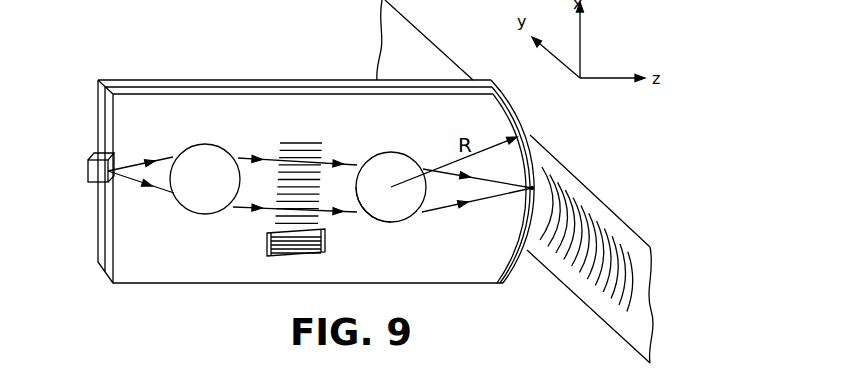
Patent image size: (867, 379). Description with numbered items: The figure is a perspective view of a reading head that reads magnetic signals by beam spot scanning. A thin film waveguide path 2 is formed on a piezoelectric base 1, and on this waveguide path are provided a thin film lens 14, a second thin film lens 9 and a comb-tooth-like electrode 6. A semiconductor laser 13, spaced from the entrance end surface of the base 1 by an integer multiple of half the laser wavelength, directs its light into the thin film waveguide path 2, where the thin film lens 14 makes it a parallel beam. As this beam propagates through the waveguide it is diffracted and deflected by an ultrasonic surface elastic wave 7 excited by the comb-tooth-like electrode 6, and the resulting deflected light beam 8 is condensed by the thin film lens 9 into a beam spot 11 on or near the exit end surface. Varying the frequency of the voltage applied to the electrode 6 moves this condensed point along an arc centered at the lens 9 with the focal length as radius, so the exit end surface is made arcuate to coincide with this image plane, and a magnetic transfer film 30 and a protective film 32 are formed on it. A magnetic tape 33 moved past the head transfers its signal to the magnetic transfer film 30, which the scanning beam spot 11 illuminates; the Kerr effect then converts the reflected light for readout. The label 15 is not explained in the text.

The piezoelectric base 1 is at (132, 80).
The thin film waveguide path 2 is at (186, 93).
The comb-tooth-like electrode 6 is at (321, 256).
The ultrasonic wave surface elastic wave 7 is at (308, 152).
The deflected light beam 8 is at (358, 216).
The thin film lens 9 is at (402, 156).
The beam spot 11 is at (533, 188).
The semiconductor laser 13 is at (92, 170).
The thin film lens 14 is at (208, 146).
The light beam 15 is at (234, 210).
The magnetic transfer film 30 is at (501, 285).
The protective film 32 is at (500, 284).
The magnetic tape 33 is at (608, 211).